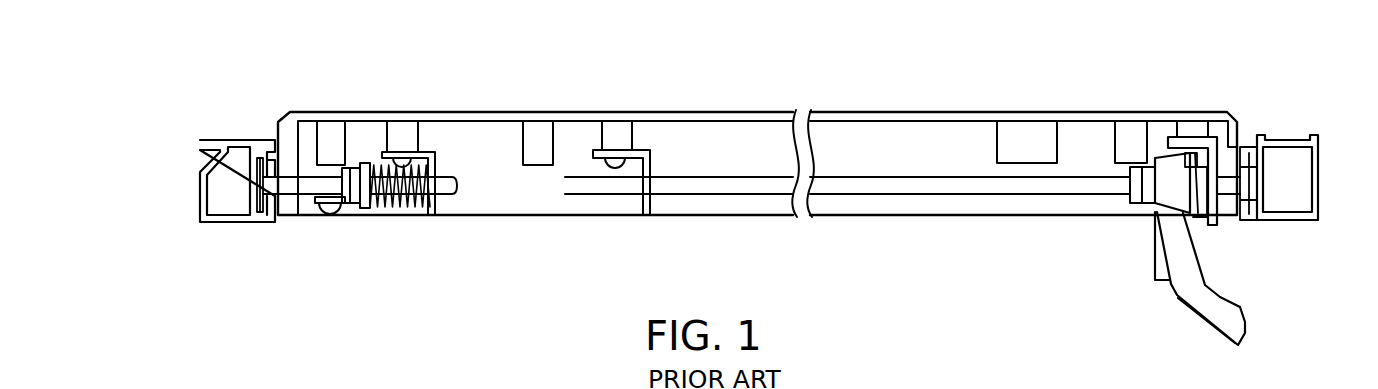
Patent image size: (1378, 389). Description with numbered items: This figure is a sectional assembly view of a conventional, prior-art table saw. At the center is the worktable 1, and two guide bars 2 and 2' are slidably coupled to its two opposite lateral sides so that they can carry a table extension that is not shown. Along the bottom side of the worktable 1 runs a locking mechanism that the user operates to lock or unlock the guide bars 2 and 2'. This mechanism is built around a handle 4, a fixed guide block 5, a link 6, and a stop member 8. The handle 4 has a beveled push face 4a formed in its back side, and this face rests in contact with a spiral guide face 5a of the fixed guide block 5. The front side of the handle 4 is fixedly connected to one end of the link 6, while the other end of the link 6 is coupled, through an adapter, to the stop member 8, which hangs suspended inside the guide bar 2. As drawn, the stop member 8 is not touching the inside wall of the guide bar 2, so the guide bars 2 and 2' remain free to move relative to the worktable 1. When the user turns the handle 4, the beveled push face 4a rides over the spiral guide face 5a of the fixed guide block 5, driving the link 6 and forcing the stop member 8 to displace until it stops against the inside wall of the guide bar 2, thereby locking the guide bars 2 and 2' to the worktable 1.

The worktable 1 is at (909, 112).
The guide bar 2 is at (219, 147).
The guide bar 2' is at (1309, 143).
The handle 4 is at (1236, 318).
The beveled push face 4a is at (1193, 173).
The fixed guide block 5 is at (1202, 168).
The spiral guide face 5a is at (1200, 192).
The link 6 is at (713, 172).
The stop member 8 is at (257, 194).